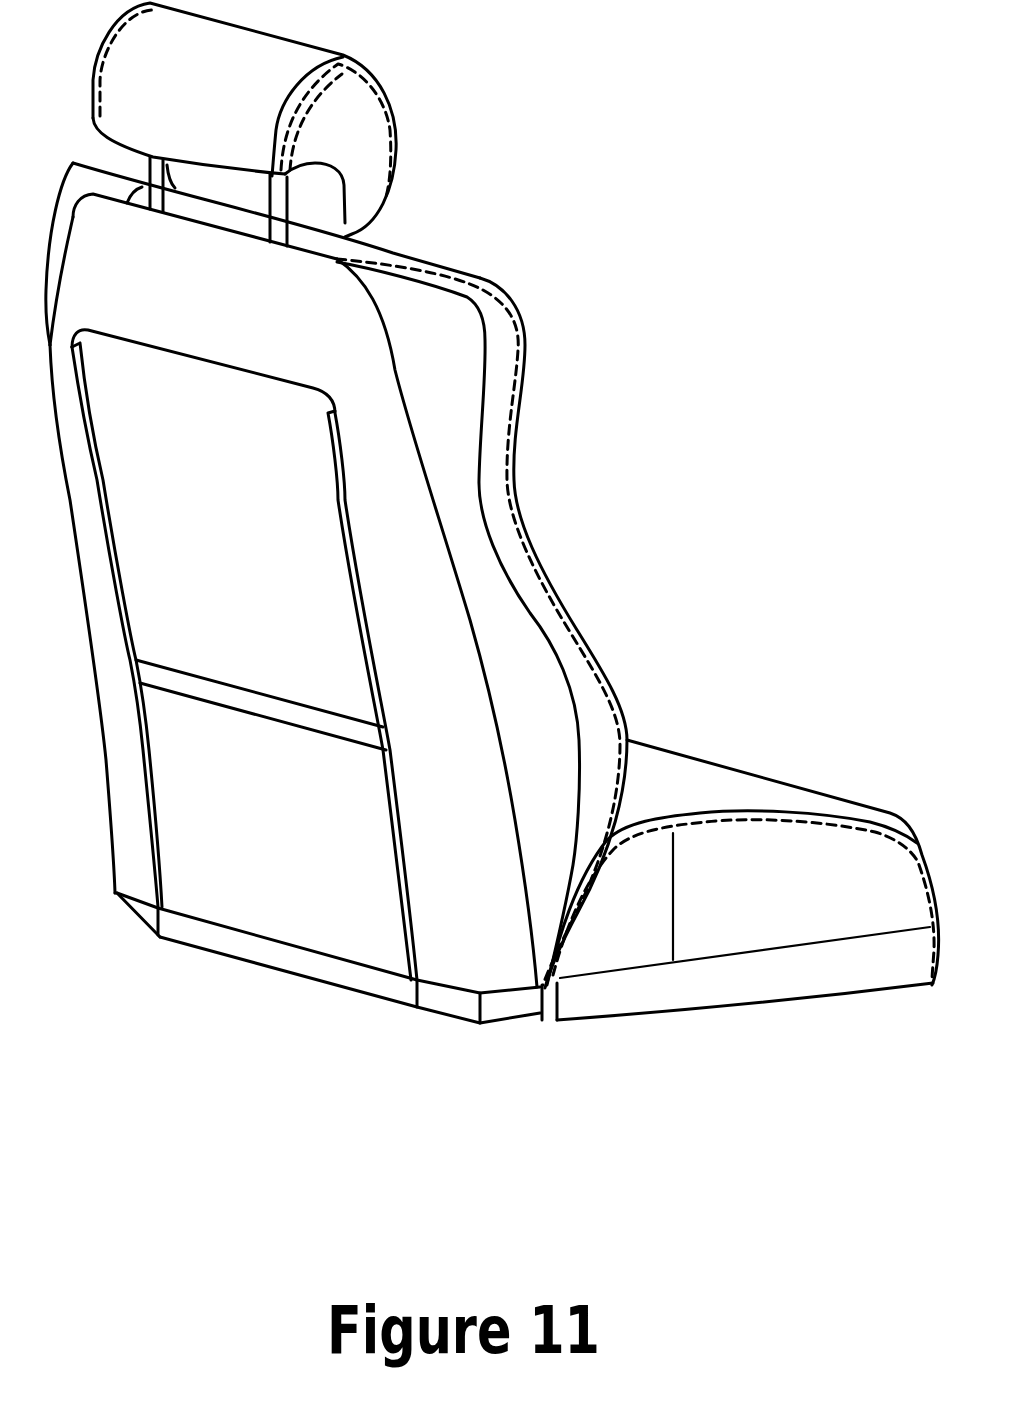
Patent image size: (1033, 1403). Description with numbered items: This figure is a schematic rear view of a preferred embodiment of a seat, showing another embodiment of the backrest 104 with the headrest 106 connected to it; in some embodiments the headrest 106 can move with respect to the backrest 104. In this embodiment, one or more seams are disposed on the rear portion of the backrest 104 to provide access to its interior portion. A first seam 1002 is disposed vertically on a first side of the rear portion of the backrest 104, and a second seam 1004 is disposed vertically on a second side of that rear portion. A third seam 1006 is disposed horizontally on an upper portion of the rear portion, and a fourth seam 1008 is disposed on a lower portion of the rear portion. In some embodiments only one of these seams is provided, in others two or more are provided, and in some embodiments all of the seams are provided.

The headrest 106 is at (385, 100).
The backrest 104 is at (462, 313).
The third seam 1006 is at (153, 347).
The first seam 1002 is at (127, 573).
The second seam 1004 is at (375, 680).
The fourth seam 1008 is at (232, 923).